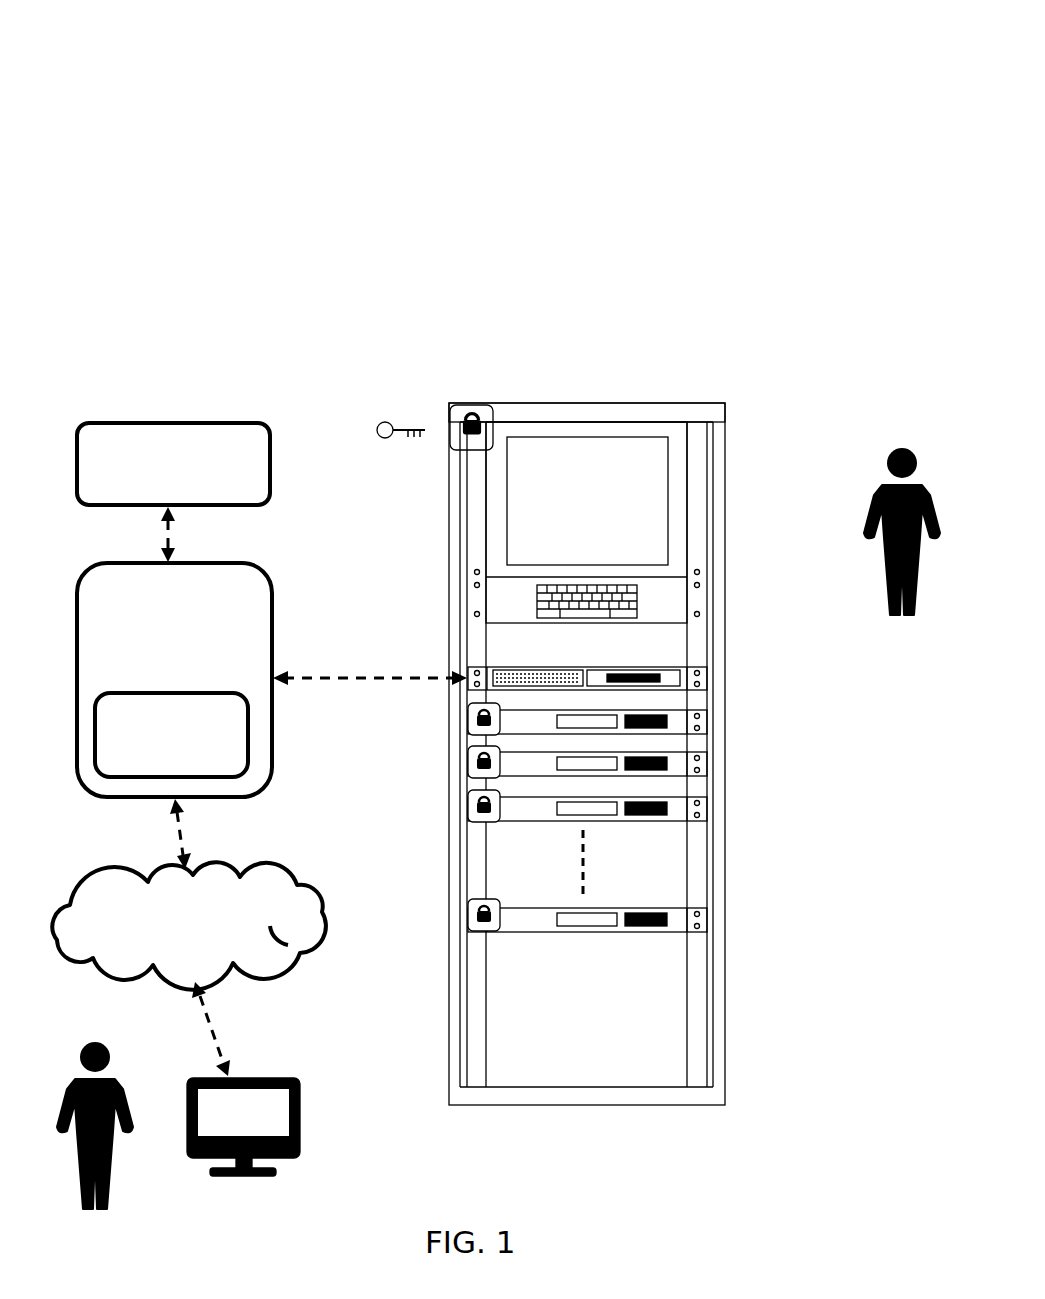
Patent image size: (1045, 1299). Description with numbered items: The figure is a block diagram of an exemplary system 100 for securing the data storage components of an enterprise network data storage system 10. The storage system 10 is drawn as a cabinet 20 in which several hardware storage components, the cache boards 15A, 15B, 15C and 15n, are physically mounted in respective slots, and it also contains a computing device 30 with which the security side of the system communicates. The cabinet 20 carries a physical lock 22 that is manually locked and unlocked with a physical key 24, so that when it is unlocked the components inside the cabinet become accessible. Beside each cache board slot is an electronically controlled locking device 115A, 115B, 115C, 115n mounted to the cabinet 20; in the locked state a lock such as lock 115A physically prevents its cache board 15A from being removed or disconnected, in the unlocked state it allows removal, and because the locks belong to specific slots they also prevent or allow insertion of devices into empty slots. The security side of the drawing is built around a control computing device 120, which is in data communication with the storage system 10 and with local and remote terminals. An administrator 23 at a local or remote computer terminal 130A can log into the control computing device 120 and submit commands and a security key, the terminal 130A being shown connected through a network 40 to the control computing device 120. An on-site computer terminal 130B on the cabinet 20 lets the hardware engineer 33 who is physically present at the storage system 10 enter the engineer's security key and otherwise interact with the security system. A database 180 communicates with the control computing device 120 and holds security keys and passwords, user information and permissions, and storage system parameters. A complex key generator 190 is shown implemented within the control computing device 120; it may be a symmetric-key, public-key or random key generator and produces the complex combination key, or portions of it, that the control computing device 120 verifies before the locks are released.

The system 100 is at (110, 99).
The enterprise network data storage system 10 is at (747, 331).
The cabinet 20 is at (722, 413).
The physical lock 22 is at (470, 407).
The physical key 24 is at (383, 423).
The computing device 30 is at (693, 676).
The cache board 15A is at (686, 718).
The cache board 15B is at (686, 763).
The cache board 15C is at (686, 812).
The cache board 15n is at (686, 917).
The electronically controlled locking device 115A is at (468, 719).
The electronically controlled locking device 115B is at (468, 762).
The electronically controlled locking device 115C is at (468, 803).
The electronically controlled locking device 115n is at (468, 914).
The remote computer terminal 130A is at (263, 1078).
The on-site computer terminal 130B is at (673, 511).
The hardware engineer 33 is at (865, 523).
The administrator 23 is at (117, 1080).
The network 40 is at (245, 873).
The database 180 is at (173, 464).
The control computing device 120 is at (174, 680).
The complex key generator 190 is at (171, 735).